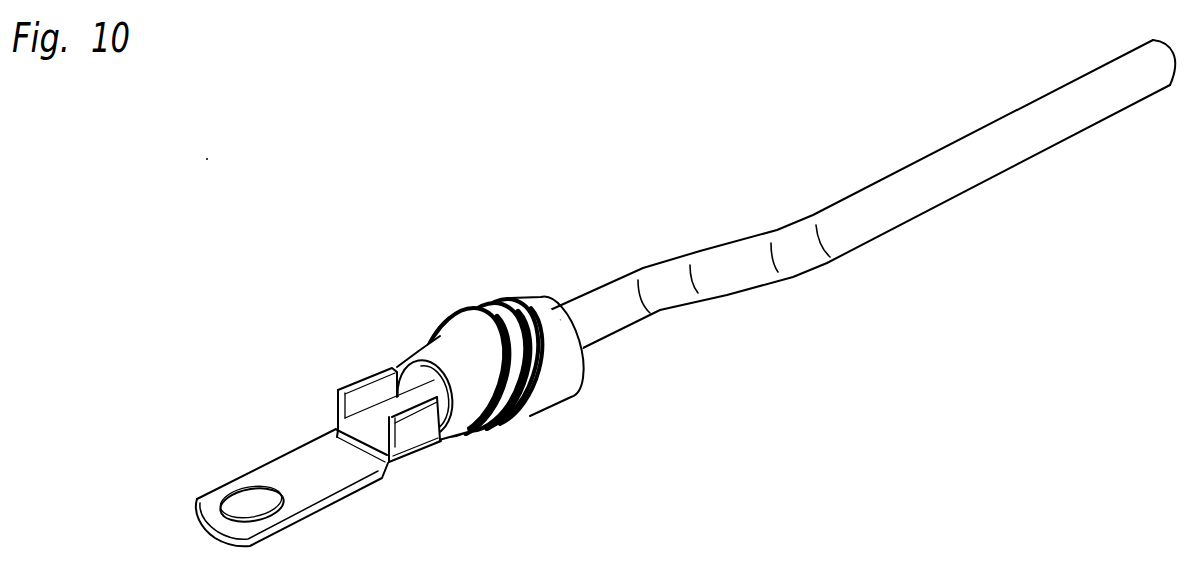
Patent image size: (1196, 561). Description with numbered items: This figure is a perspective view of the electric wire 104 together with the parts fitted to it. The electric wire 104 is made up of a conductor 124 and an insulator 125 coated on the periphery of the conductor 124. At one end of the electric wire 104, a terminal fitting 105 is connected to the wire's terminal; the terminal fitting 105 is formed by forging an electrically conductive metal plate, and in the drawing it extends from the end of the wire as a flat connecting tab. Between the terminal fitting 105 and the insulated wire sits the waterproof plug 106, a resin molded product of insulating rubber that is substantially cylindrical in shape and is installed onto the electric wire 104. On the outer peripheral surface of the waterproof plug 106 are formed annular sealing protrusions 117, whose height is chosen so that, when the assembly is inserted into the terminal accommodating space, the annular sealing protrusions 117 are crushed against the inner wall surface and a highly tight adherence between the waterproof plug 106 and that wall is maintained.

The electric wire 104 is at (692, 116).
The terminal fitting 105 is at (305, 473).
The waterproof plug 106 is at (562, 369).
The annular sealing protrusions 117 is at (529, 403).
The conductor 124 is at (373, 427).
The insulator 125 is at (730, 255).